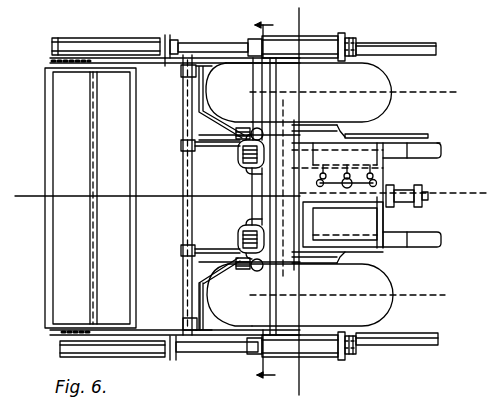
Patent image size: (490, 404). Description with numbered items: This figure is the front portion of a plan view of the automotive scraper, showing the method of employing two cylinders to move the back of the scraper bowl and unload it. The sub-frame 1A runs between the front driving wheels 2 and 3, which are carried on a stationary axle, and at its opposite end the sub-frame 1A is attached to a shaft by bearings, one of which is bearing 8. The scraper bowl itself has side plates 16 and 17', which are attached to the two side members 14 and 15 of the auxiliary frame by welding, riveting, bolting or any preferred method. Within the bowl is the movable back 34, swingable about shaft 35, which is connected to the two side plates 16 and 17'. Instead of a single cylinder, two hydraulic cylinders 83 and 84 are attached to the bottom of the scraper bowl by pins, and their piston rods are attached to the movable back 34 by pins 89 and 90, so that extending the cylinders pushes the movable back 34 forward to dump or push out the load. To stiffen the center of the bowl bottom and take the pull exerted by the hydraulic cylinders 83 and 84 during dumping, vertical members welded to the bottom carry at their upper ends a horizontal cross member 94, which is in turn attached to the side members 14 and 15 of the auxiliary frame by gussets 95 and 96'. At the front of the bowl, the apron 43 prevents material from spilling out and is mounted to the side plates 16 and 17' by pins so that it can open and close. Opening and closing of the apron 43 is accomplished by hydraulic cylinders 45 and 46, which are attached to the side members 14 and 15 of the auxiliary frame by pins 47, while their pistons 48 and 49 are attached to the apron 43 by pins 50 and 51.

The sub-frame 1A is at (426, 238).
The front driving wheel 2 is at (352, 287).
The front driving wheel 3 is at (352, 84).
The bearing 8 is at (267, 201).
The side member 14 is at (438, 341).
The side member 15 is at (437, 47).
The side plate 16 is at (165, 332).
The side plate 17' is at (167, 71).
The movable back 34 is at (200, 283).
The shaft 35 is at (191, 221).
The apron 43 is at (51, 178).
The hydraulic cylinder 45 is at (315, 350).
The hydraulic cylinder 46 is at (292, 36).
The pin 47 is at (350, 33).
The piston 48 is at (238, 346).
The piston 49 is at (204, 43).
The pin 50 is at (175, 358).
The pin 51 is at (165, 38).
The hydraulic cylinder 83 is at (237, 236).
The hydraulic cylinder 84 is at (237, 157).
The pin 89 is at (252, 226).
The pin 90 is at (248, 170).
The horizontal cross member 94 is at (257, 104).
The gusset 95 is at (295, 328).
The gusset 96' is at (240, 107).